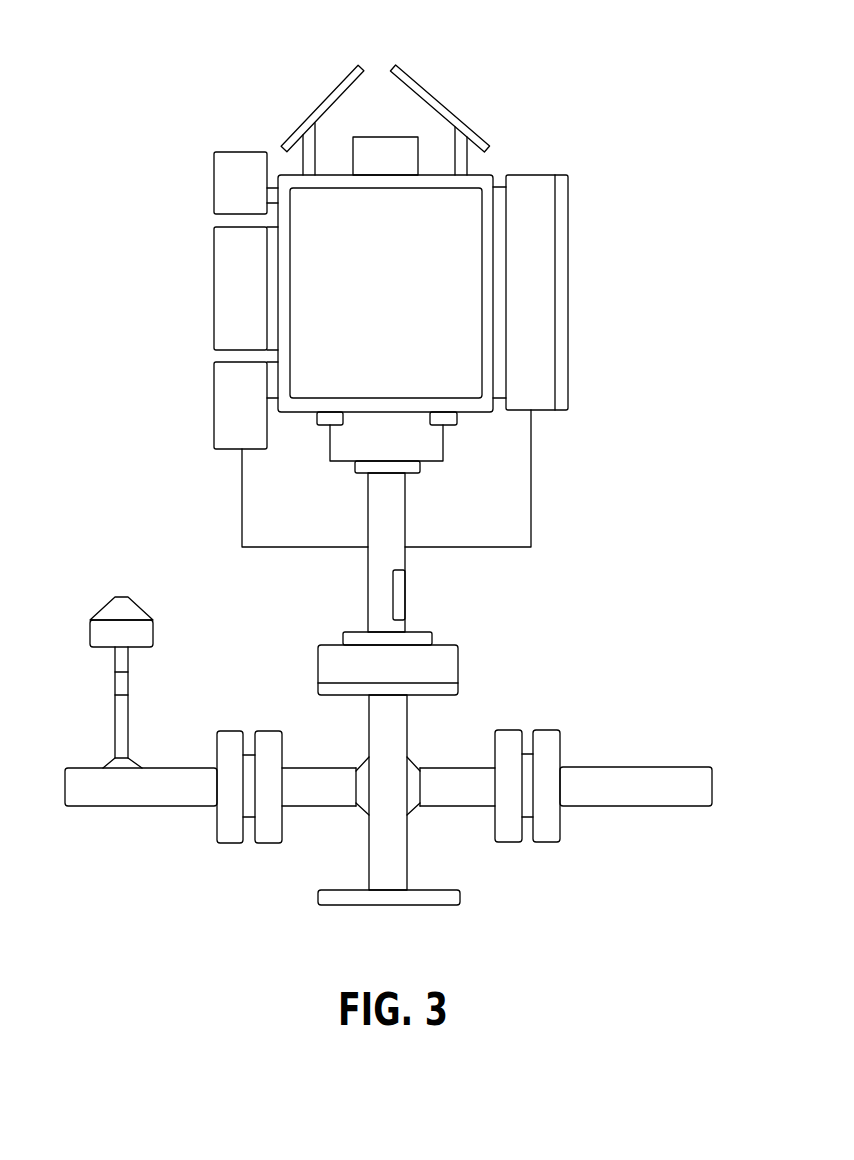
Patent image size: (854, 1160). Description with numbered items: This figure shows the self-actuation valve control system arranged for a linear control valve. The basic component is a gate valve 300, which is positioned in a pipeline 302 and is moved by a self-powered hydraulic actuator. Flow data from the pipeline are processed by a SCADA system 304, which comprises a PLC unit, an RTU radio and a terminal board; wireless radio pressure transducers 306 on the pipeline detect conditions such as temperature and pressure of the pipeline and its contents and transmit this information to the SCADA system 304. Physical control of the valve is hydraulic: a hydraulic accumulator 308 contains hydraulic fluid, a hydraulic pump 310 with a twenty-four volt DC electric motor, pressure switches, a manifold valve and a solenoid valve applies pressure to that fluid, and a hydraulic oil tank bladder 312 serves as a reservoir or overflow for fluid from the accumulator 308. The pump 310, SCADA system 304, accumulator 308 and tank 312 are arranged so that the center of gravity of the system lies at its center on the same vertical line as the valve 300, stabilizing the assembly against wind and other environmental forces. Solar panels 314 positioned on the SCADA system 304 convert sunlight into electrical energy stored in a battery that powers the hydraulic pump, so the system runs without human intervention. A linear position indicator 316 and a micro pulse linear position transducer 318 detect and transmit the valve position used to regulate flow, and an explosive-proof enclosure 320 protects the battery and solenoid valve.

The gate valve 300 is at (460, 902).
The pipeline 302 is at (115, 807).
The SCADA system 304 is at (442, 213).
The wireless radio pressure transducer 306 is at (115, 597).
The hydraulic accumulator 308 is at (227, 190).
The hydraulic pump 310 is at (530, 287).
The hydraulic oil tank bladder 312 is at (430, 448).
The solar panels 314 is at (340, 78).
The linear position indicator 316 is at (405, 597).
The micro pulse linear position transducer 318 is at (347, 130).
The explosive-proof enclosure 320 is at (520, 433).